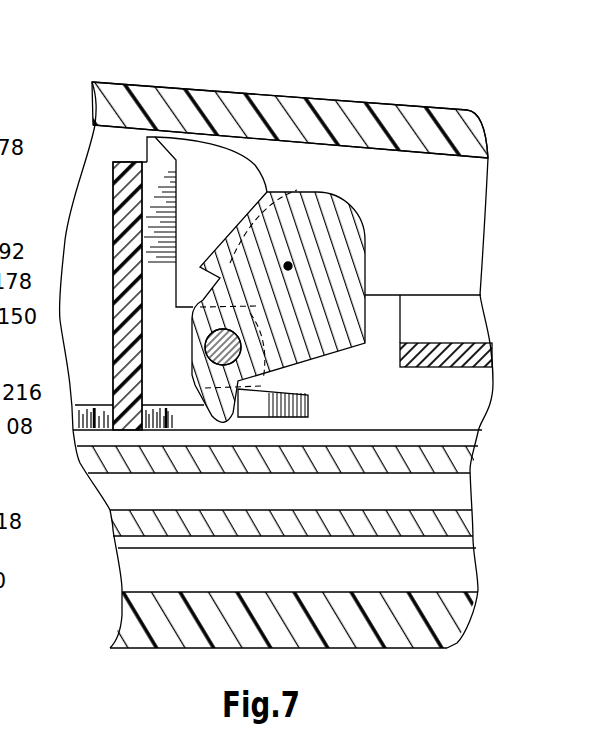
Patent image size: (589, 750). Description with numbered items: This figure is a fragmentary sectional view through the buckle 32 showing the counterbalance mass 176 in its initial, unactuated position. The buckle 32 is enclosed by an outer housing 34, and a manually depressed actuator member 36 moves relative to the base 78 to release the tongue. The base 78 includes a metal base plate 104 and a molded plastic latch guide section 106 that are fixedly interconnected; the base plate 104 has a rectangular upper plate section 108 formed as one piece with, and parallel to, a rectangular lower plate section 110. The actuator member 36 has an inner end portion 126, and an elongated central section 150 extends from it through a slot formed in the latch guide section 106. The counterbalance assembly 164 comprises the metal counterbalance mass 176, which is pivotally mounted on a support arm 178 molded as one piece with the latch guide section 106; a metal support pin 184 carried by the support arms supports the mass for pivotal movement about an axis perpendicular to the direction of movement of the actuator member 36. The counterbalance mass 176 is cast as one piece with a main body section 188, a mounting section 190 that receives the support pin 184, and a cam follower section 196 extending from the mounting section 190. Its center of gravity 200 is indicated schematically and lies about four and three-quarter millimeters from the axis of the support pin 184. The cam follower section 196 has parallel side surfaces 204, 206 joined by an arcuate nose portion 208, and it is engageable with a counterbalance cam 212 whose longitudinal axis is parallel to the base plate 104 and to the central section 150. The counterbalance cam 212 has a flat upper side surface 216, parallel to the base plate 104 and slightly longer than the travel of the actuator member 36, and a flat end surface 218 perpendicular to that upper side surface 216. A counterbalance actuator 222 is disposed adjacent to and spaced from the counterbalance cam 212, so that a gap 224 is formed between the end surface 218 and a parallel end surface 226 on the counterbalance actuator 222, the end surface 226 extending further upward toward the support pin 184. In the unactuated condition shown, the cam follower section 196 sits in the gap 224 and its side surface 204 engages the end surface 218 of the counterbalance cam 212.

The buckle 32 is at (429, 74).
The outer housing 34 is at (337, 120).
The actuator member 36 is at (467, 316).
The base 78 is at (74, 470).
The base plate 104 is at (110, 540).
The latch guide section 106 is at (177, 142).
The upper plate section 108 is at (467, 450).
The lower plate section 110 is at (460, 520).
The inner end portion 126 is at (492, 357).
The central section 150 is at (380, 294).
The counterbalance assembly 164 is at (283, 141).
The counterbalance mass 176 is at (353, 206).
The support arm 178 is at (190, 258).
The support pin 184 is at (222, 338).
The main body section 188 is at (348, 237).
The mounting section 190 is at (200, 352).
The cam follower section 196 is at (221, 435).
The center of gravity 200 is at (290, 265).
The side surface 204 is at (207, 397).
The side surface 206 is at (238, 387).
The arcuate nose portion 208 is at (230, 431).
The counterbalance cam 212 is at (70, 430).
The upper side surface 216 is at (100, 407).
The end surface 218 is at (210, 430).
The counterbalance actuator 222 is at (314, 397).
The gap 224 is at (232, 433).
The end surface 226 is at (238, 415).